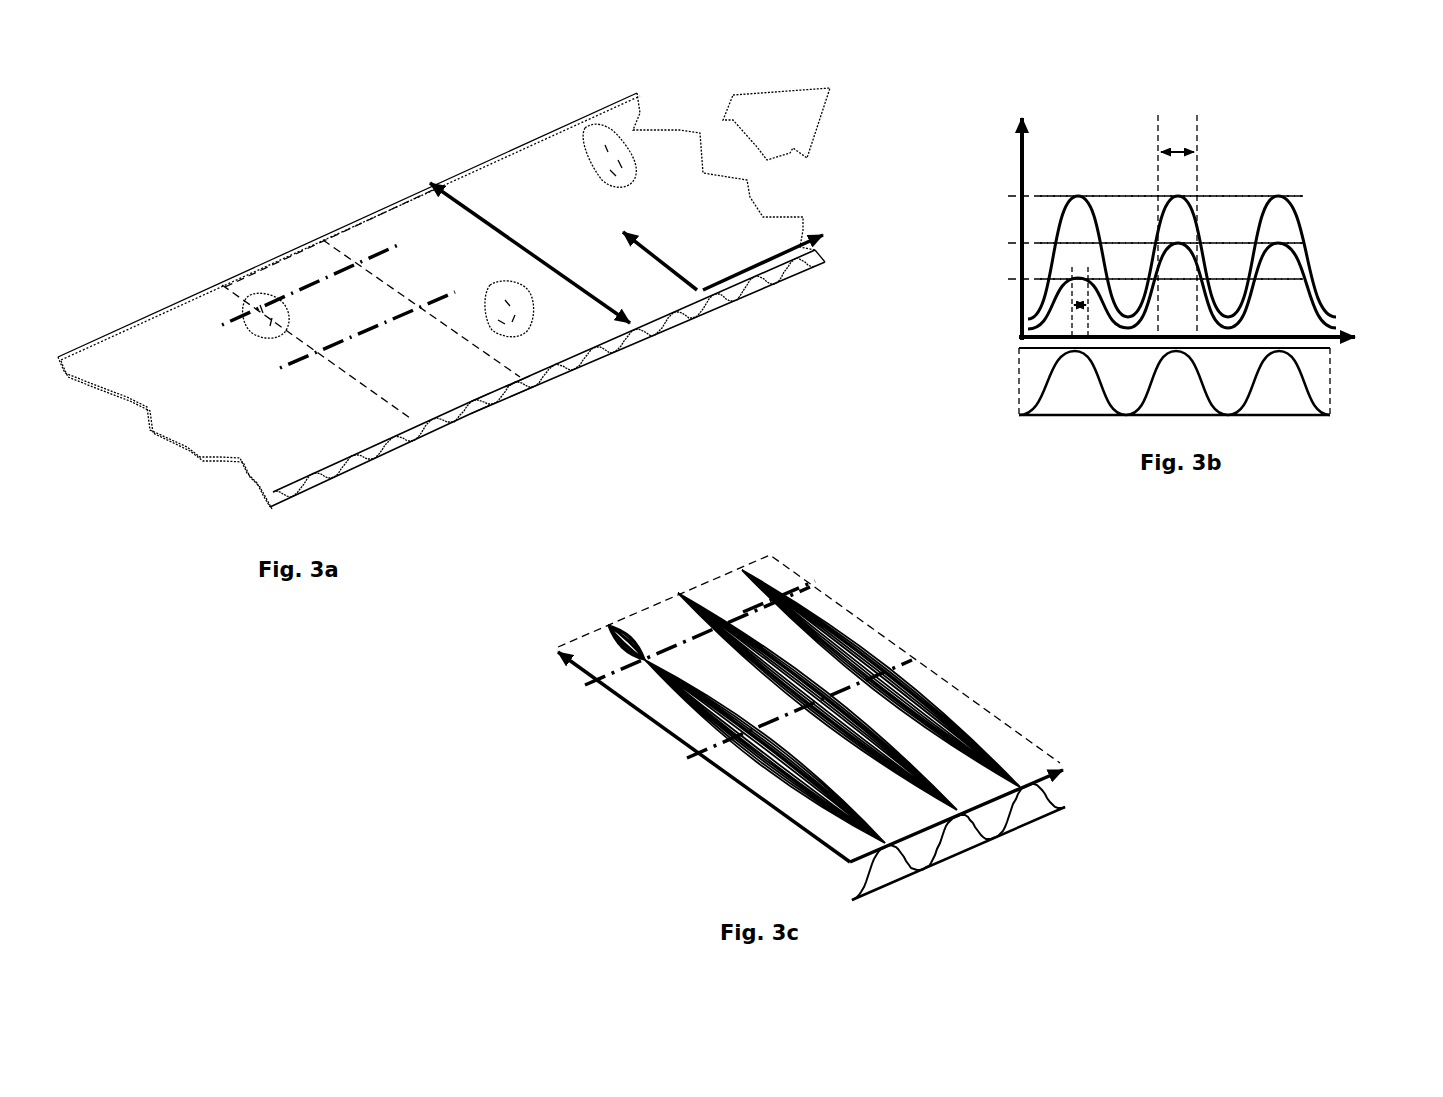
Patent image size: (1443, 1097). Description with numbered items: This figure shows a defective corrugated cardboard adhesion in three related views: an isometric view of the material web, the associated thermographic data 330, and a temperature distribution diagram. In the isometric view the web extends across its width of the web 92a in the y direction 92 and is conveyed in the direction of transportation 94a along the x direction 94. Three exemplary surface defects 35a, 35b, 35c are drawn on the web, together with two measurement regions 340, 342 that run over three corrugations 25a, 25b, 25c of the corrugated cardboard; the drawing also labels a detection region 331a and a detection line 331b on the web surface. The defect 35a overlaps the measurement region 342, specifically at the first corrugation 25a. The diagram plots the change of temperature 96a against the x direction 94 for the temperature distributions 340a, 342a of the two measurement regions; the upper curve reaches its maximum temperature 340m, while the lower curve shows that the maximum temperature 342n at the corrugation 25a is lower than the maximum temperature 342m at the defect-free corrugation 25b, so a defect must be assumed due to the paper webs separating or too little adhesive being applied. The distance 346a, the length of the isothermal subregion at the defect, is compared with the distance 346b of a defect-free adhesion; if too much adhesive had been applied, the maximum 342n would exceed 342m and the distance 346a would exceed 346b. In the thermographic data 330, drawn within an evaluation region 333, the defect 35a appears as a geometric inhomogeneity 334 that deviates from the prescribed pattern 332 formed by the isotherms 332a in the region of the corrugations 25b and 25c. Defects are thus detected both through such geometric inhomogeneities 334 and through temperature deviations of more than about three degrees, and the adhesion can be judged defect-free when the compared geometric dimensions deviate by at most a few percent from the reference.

In FIG. 3A, the first corrugation 25a is at (443, 425).
In FIG. 3B, the first corrugation 25a is at (1072, 383).
In FIG. 3C, the first corrugation 25a is at (888, 880).
In FIG. 3A, the corrugation 25b is at (480, 410).
In FIG. 3B, the corrugation 25b is at (1177, 383).
In FIG. 3C, the corrugation 25b is at (961, 851).
In FIG. 3A, the corrugation 25c is at (517, 393).
In FIG. 3B, the corrugation 25c is at (1279, 383).
In FIG. 3C, the corrugation 25c is at (1031, 818).
In FIG. 3A, the surface defect 35a is at (283, 250).
In FIG. 3A, the surface defect 35b is at (457, 257).
In FIG. 3A, the surface defect 35c is at (563, 138).
In FIG. 3A, the y direction 92 is at (673, 277).
In FIG. 3C, the y direction 92 is at (672, 733).
In FIG. 3A, the width of the web 92a is at (467, 200).
In FIG. 3A, the x direction 94 is at (765, 262).
In FIG. 3B, the x direction 94 is at (1330, 351).
In FIG. 3C, the x direction 94 is at (1057, 773).
In FIG. 3A, the direction of transportation 94a is at (743, 112).
In FIG. 3B, the change of temperature 96a is at (1021, 166).
In FIG. 3B, the thermographic data 330 is at (1246, 145).
In FIG. 3C, the thermographic data 330 is at (962, 672).
In FIG. 3A, the first surface portion 331a is at (466, 379).
In FIG. 3A, the second surface portion 331b is at (403, 415).
In FIG. 3C, the prescribed pattern 332 is at (1005, 753).
In FIG. 3C, the isotherms 332a is at (878, 640).
In FIG. 3C, the fiber structure base 333 is at (925, 824).
In FIG. 3C, the geometric inhomogeneity 334 is at (642, 672).
In FIG. 3A, the measurement region 340 is at (293, 360).
In FIG. 3C, the measurement region 340 is at (847, 688).
In FIG. 3B, the temperature distribution 340a is at (1306, 247).
In FIG. 3B, the maximum of first distribution 340m is at (1040, 196).
In FIG. 3A, the measurement region 342 is at (233, 318).
In FIG. 3C, the measurement region 342 is at (743, 612).
In FIG. 3B, the temperature distribution 342a is at (1330, 319).
In FIG. 3B, the maximum temperature 342m is at (1040, 243).
In FIG. 3B, the lower maximum temperature 342n is at (1040, 279).
In FIG. 3B, the distance 346a is at (1070, 303).
In FIG. 3B, the distance 346b is at (1184, 214).